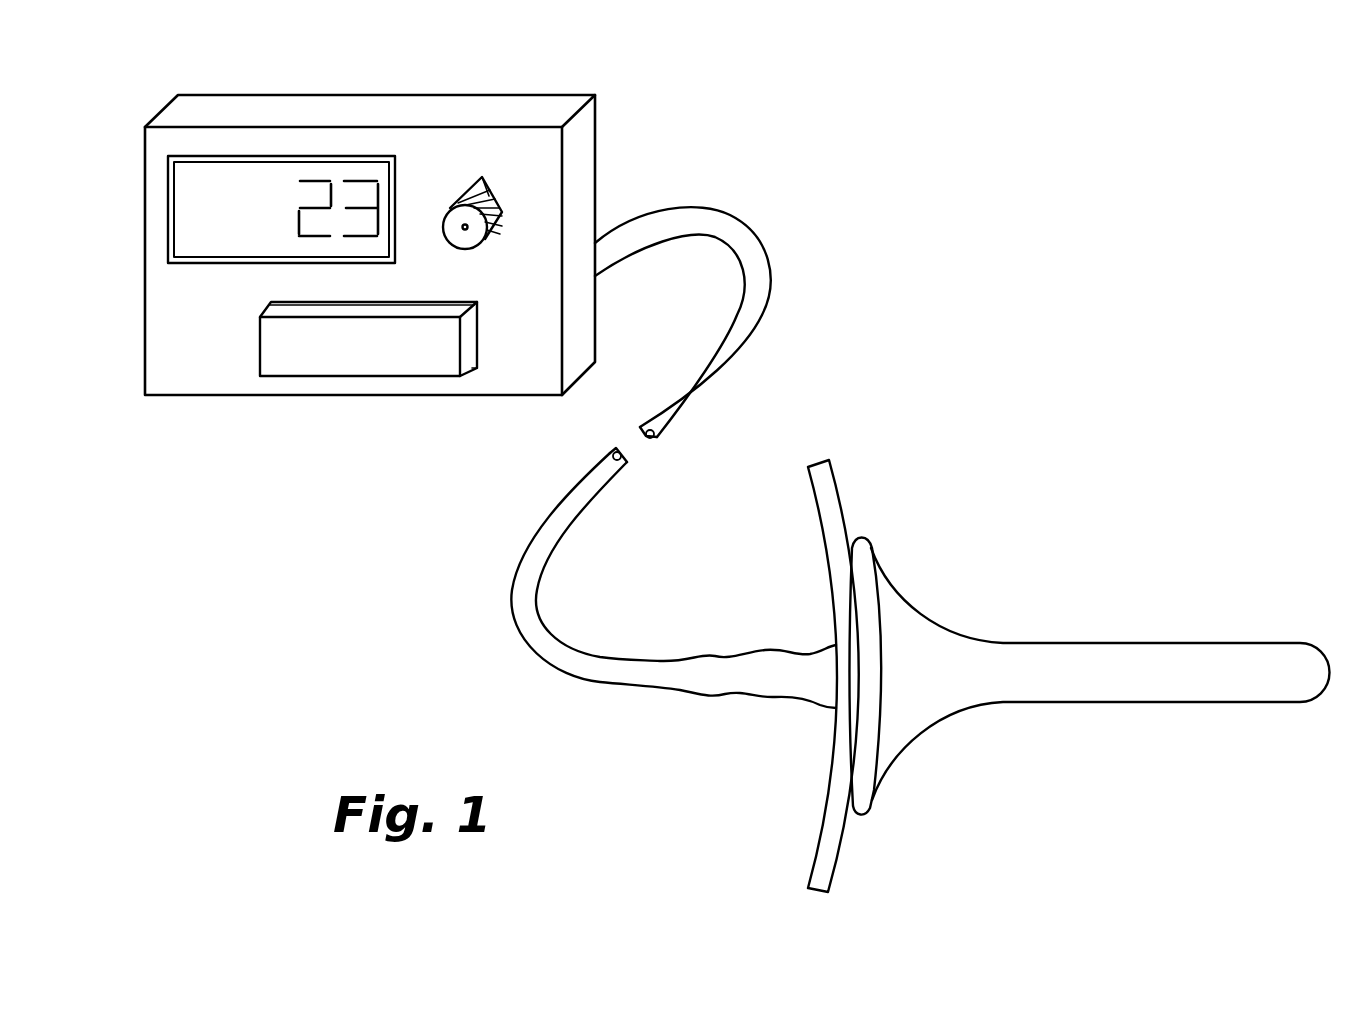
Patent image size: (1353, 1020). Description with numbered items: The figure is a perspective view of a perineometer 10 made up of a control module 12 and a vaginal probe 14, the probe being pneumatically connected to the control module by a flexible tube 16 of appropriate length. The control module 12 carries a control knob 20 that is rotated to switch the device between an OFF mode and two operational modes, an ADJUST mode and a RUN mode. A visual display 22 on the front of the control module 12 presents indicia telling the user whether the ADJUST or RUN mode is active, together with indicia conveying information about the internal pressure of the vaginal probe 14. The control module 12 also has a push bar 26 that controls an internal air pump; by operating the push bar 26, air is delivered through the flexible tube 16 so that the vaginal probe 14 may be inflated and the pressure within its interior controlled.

The perineometer 10 is at (758, 158).
The control module 12 is at (414, 78).
The vaginal probe 14 is at (1133, 614).
The flexible tube 16 is at (757, 303).
The control knob 20 is at (500, 203).
The visual display 22 is at (168, 230).
The push bar 26 is at (345, 369).